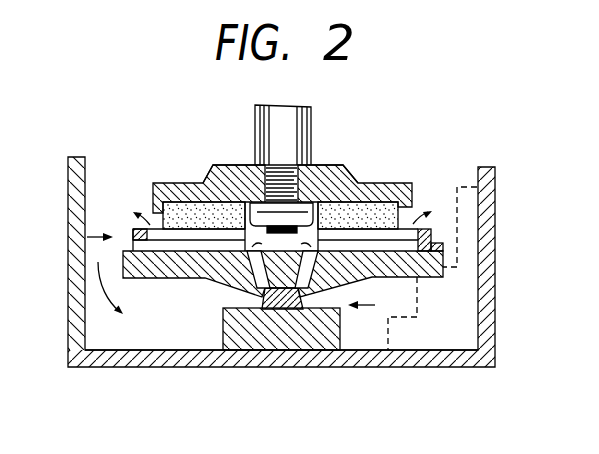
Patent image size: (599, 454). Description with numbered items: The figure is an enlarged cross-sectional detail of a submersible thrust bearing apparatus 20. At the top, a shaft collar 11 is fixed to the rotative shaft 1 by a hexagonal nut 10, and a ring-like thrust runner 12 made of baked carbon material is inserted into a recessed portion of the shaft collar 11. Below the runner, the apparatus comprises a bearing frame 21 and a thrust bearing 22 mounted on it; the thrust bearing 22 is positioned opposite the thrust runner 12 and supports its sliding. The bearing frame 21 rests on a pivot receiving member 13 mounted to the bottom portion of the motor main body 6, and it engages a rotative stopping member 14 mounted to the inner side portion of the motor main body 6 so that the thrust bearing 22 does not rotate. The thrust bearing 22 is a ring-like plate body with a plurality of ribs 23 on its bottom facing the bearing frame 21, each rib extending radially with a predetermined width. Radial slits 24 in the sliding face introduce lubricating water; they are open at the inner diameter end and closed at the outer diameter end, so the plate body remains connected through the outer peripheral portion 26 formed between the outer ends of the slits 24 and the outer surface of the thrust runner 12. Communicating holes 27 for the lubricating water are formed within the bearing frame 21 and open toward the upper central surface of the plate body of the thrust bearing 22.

The rotative shaft 1 is at (268, 143).
The motor main body 6 is at (486, 207).
The hexagonal nut 10 is at (330, 198).
The shaft collar 11 is at (212, 165).
The thrust runner 12 is at (175, 206).
The pivot receiving member 13 is at (296, 310).
The rotative stopping member 14 is at (421, 338).
The submersible thrust bearing apparatus 20 is at (68, 239).
The bearing frame 21 is at (207, 279).
The thrust bearing 22 is at (137, 236).
The ribs 23 is at (436, 277).
The slits 24 is at (368, 237).
The outer peripheral portion 26 is at (397, 237).
The communicating holes 27 is at (233, 293).